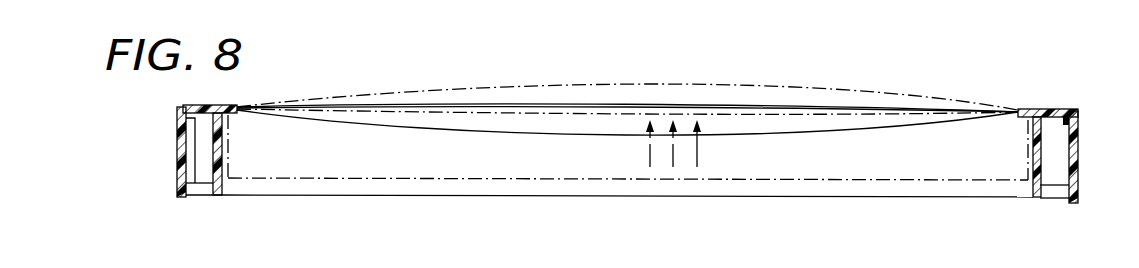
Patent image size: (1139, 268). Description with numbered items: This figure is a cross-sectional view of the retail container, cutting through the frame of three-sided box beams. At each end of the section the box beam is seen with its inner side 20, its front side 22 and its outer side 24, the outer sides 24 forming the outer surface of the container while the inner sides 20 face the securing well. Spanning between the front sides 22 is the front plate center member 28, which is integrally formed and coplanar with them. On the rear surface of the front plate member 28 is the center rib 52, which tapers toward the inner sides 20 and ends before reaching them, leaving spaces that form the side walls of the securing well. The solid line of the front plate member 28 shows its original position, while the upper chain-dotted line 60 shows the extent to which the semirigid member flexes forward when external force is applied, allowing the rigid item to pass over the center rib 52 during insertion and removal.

The inner sides 20 is at (218, 148).
The front sides 22 is at (201, 108).
The outer sides 24 is at (178, 147).
The front plate center member 28 is at (610, 116).
The center rib 52 is at (620, 133).
The upper chain-dotted line 60 is at (748, 85).